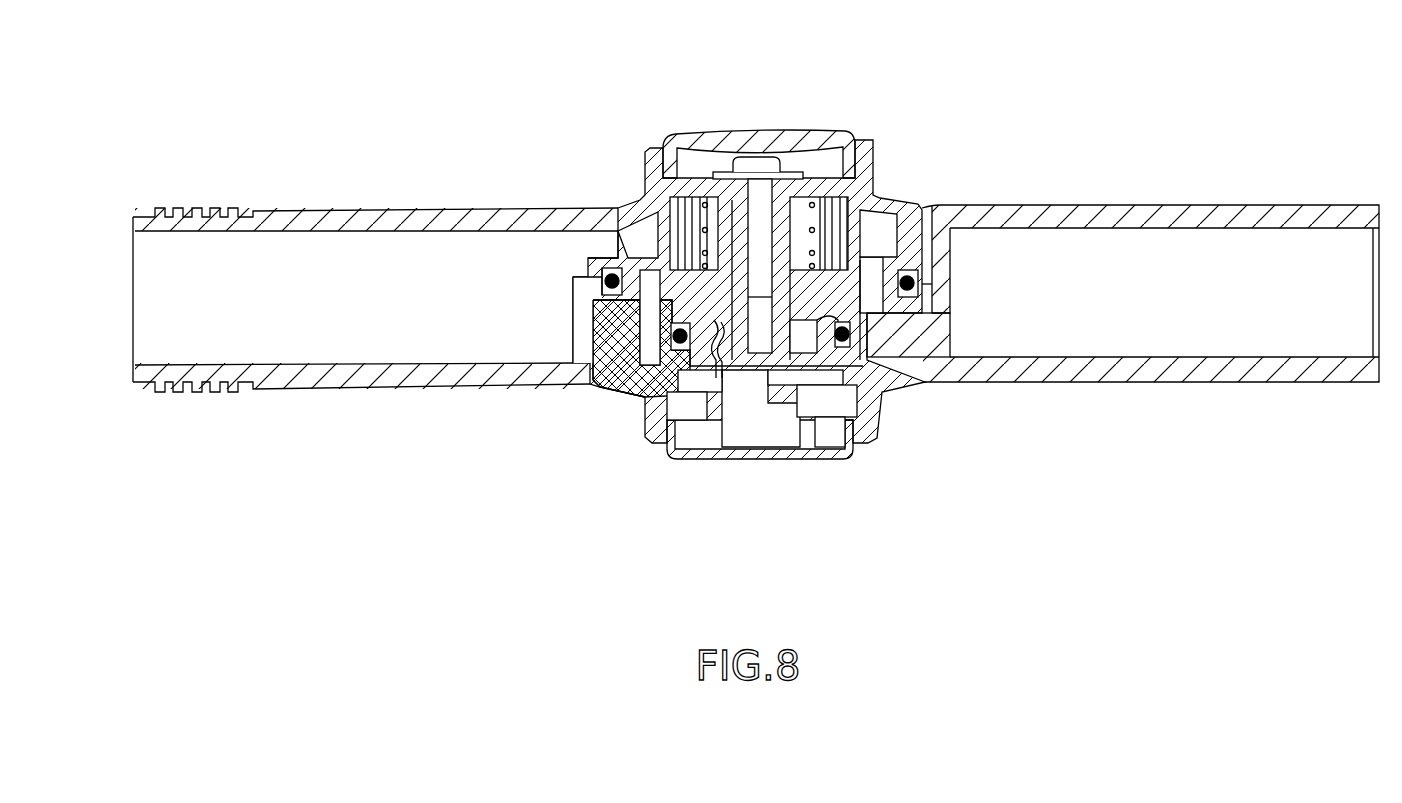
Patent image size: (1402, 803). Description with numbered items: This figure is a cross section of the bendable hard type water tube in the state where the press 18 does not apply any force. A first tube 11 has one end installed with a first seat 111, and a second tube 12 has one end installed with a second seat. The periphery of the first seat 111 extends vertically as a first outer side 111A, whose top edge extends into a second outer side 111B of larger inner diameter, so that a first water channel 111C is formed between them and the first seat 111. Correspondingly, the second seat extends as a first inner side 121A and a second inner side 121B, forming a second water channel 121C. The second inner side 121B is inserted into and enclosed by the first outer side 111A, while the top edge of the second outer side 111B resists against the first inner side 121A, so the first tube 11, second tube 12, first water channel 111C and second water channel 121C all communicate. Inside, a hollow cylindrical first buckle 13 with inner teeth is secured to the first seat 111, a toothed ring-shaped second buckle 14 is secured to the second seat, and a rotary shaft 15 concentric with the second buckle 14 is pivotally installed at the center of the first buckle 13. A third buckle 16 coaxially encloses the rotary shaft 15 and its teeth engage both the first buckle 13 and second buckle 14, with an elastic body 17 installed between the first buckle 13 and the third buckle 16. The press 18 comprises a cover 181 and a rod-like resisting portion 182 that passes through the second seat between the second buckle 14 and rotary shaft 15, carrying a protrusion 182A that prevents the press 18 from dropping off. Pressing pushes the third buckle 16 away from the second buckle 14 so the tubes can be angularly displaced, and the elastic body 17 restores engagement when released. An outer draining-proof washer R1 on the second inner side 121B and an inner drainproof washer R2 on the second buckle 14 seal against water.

The first tube 11 is at (427, 220).
The second tube 12 is at (1180, 372).
The first seat 111 is at (607, 193).
The first outer side 111A is at (875, 302).
The second outer side 111B is at (922, 284).
The first water channel 111C is at (648, 231).
The first inner side 121A is at (625, 272).
The second inner side 121B is at (645, 320).
The second water channel 121C is at (893, 330).
The first buckle 13 is at (660, 362).
The second buckle 14 is at (665, 368).
The rotary shaft 15 is at (773, 197).
The third buckle 16 is at (818, 283).
The elastic body 17 is at (700, 197).
The press 18 is at (822, 482).
The cover 181 is at (785, 452).
The resisting portion 182 is at (707, 450).
The protrusion 182A is at (720, 377).
The outer draining-proof washer R1 is at (601, 276).
The inner drainproof washer R2 is at (676, 343).